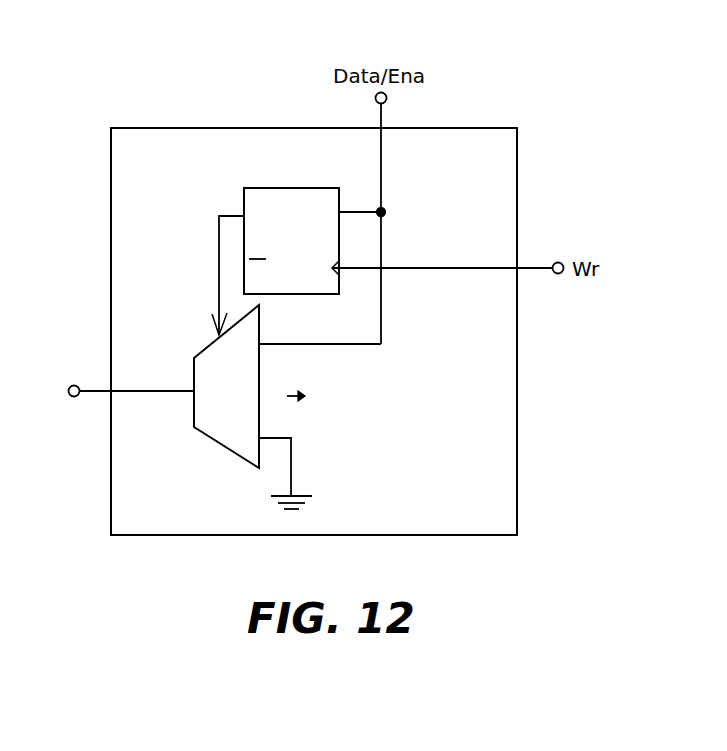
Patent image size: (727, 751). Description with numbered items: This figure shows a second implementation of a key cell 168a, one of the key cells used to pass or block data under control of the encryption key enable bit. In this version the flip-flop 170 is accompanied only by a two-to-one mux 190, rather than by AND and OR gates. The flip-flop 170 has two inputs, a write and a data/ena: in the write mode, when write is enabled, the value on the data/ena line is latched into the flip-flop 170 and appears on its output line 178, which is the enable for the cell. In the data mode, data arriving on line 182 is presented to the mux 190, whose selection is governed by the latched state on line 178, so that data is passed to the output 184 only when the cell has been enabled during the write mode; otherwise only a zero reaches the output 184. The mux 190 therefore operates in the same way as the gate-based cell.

The key cell 168a is at (216, 129).
The flip-flop 170 is at (297, 187).
The input 178 is at (218, 253).
The line 182 is at (302, 343).
The output 184 is at (75, 384).
The 2 1 mux 190 is at (221, 431).